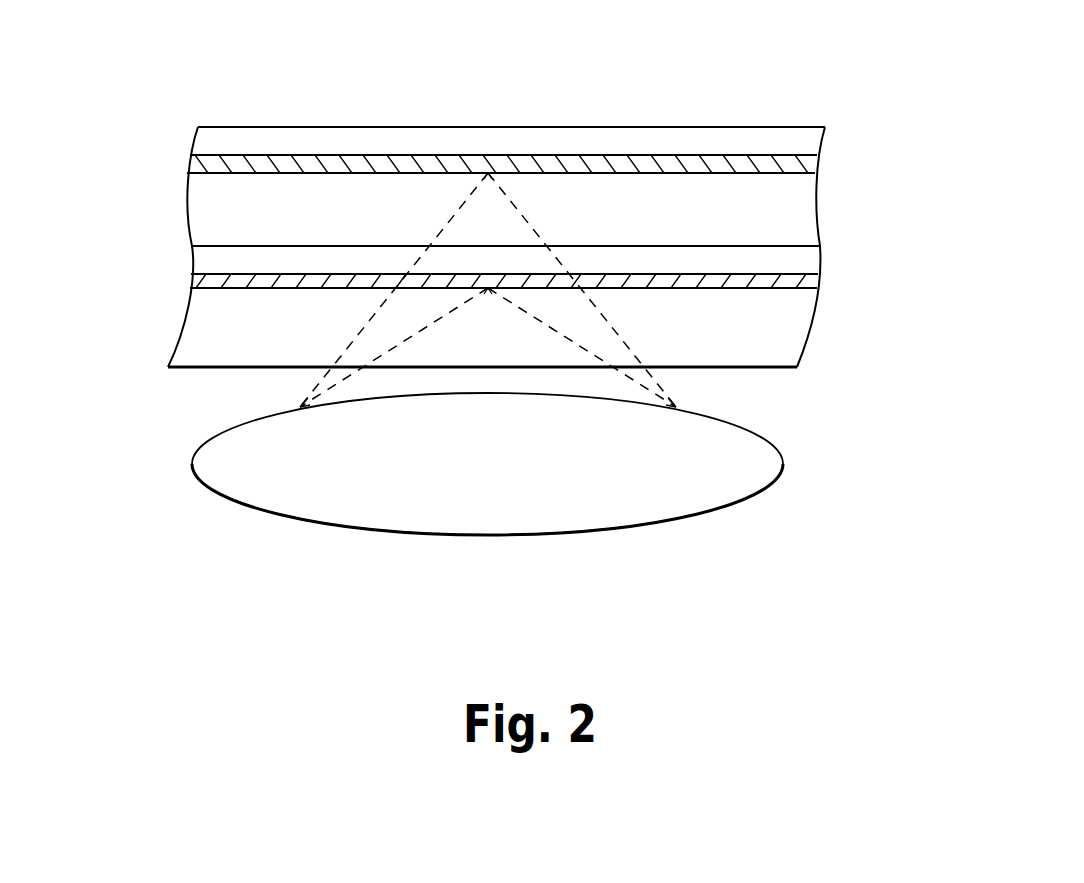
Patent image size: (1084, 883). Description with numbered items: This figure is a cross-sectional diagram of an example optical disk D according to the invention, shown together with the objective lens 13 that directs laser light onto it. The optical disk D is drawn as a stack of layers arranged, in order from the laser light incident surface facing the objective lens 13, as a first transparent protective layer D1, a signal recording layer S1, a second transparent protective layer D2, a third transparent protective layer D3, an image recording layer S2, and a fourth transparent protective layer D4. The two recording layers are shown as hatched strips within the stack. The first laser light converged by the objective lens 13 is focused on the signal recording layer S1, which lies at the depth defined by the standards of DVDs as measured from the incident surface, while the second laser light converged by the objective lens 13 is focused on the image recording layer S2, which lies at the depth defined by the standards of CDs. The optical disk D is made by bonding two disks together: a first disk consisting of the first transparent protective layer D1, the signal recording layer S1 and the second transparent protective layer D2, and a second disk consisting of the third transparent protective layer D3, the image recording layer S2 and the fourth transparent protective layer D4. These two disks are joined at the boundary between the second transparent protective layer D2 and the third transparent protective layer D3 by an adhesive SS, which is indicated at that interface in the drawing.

The optical disk D is at (802, 127).
The fourth transparent protective layer D4 is at (807, 136).
The image recording layer S2 is at (807, 160).
The third transparent protective layer D3 is at (807, 207).
The second transparent protective layer D2 is at (807, 255).
The signal recording layer S1 is at (807, 283).
The first transparent protective layer D1 is at (807, 340).
The adhesive SS is at (192, 246).
The objective lens 13 is at (575, 513).